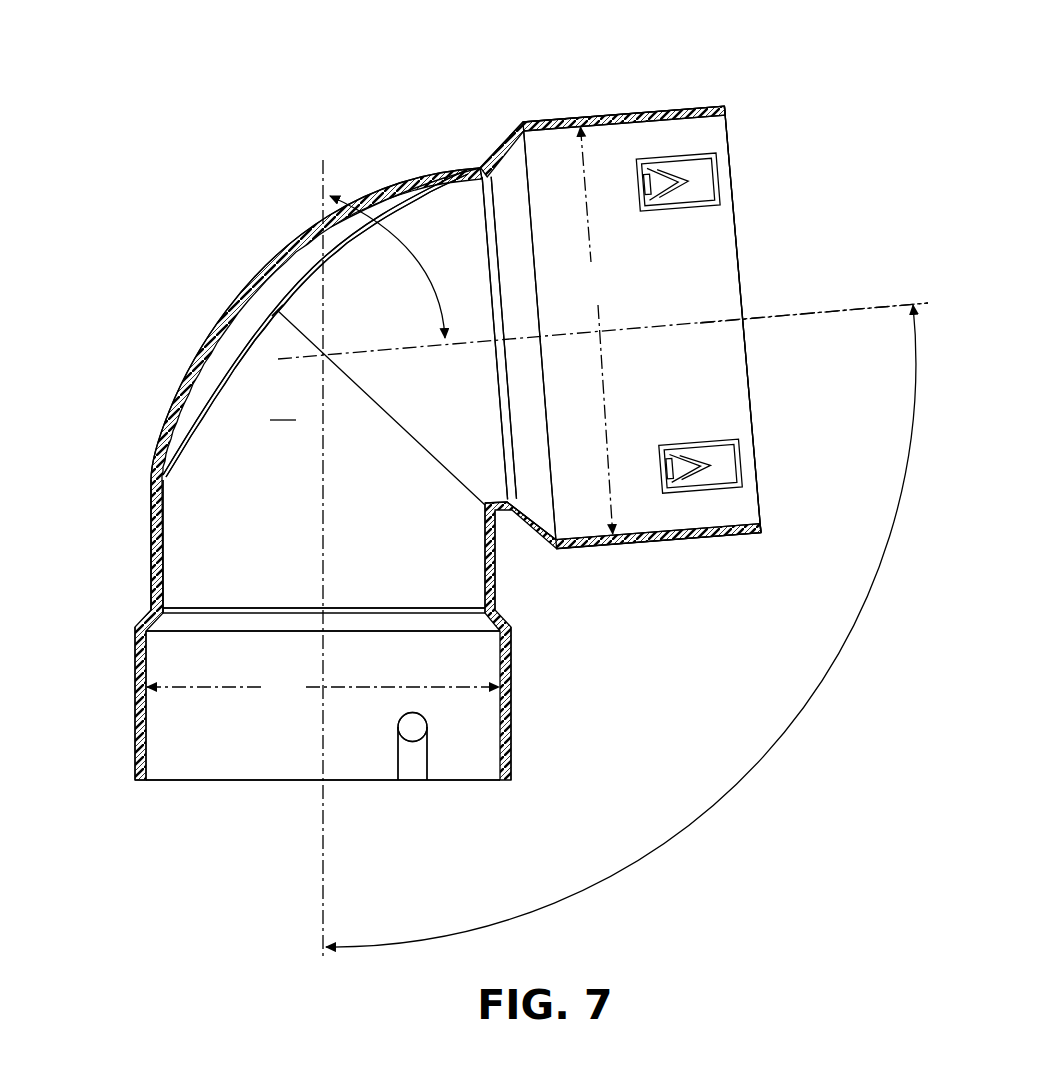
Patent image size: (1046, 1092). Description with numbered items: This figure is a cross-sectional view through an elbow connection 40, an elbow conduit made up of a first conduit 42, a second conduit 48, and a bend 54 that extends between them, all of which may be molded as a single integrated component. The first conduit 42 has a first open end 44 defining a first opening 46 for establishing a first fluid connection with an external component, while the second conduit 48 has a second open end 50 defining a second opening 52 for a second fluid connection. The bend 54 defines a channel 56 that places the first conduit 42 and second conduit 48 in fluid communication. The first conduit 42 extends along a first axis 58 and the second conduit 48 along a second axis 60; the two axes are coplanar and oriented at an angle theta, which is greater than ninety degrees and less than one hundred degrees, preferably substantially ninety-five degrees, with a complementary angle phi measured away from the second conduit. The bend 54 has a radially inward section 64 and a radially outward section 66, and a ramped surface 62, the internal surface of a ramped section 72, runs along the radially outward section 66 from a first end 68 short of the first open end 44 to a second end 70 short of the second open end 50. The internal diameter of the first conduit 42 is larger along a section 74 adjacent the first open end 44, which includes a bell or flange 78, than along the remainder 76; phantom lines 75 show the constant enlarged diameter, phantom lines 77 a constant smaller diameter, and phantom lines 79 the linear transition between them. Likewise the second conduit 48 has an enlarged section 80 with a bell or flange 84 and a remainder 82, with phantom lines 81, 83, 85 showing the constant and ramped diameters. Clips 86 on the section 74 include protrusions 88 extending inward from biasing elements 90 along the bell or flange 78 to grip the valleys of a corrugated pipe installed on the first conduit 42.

The elbow connection 40 is at (153, 142).
The first conduit 42 is at (477, 162).
The first open end 44 is at (738, 225).
The first opening 46 is at (764, 520).
The second conduit 48 is at (146, 578).
The second open end 50 is at (250, 770).
The second opening 52 is at (483, 782).
The bend 54 is at (230, 388).
The channel 56 is at (283, 408).
The first axis 58 is at (895, 302).
The second axis 60 is at (330, 757).
The ramped surface 62 is at (286, 280).
The radially inward section 64 is at (498, 518).
The radially outward section 66 is at (265, 340).
The first end 68 is at (440, 178).
The second end 70 is at (152, 438).
The ramped section 72 is at (244, 270).
The section of the first conduit 74 is at (703, 385).
The phantom lines 75 is at (655, 107).
The remainder of the first conduit 76 is at (498, 280).
The phantom lines 77 is at (484, 224).
The bell or flange 78 is at (697, 106).
The phantom lines 79 is at (479, 212).
The section of the second conduit 80 is at (182, 700).
The phantom lines 81 is at (138, 670).
The remainder of the second conduit 82 is at (187, 512).
The phantom lines 83 is at (163, 592).
The bell or flange 84 is at (137, 773).
The phantom lines 85 is at (165, 632).
The clips 86 is at (670, 168).
The protrusions 88 is at (661, 198).
The biasing element 90 is at (692, 186).